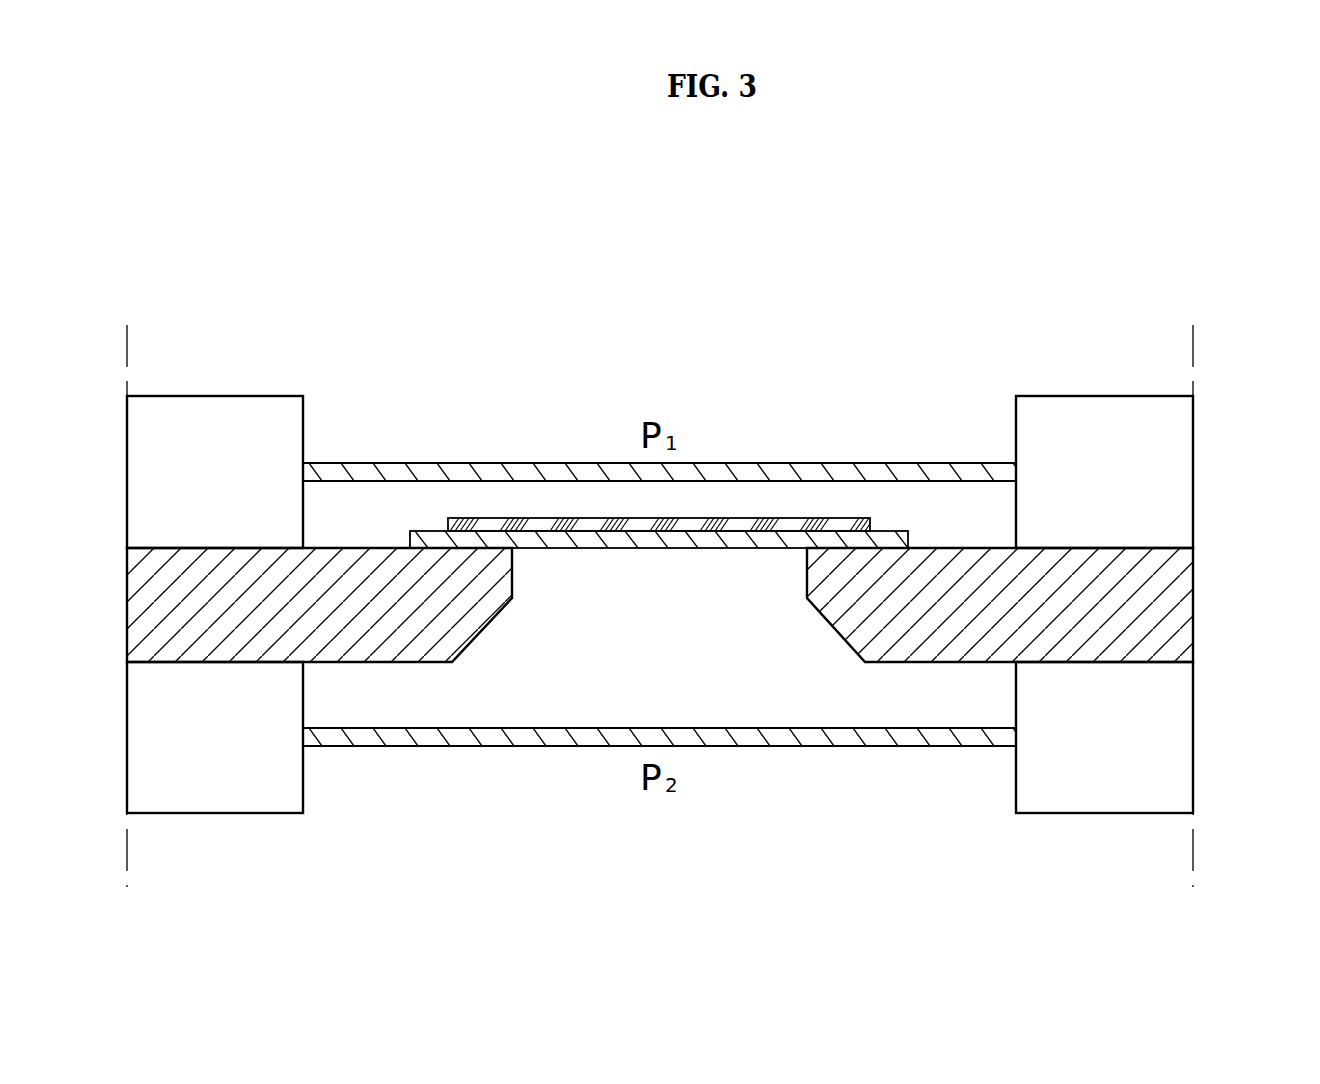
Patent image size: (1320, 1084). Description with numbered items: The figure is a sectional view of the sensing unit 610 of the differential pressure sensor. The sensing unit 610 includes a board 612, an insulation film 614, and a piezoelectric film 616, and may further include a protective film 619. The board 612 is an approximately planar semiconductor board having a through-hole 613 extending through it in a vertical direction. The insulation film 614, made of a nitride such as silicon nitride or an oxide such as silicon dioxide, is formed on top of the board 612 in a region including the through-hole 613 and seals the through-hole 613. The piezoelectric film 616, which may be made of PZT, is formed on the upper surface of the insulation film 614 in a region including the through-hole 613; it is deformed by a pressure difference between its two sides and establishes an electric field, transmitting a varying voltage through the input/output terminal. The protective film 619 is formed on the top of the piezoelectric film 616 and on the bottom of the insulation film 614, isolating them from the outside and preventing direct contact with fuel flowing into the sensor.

The sensing unit 610 is at (1178, 269).
The board 612 is at (367, 645).
The through-hole 613 is at (512, 574).
The insulation film 614 is at (889, 533).
The piezoelectric film 616 is at (763, 518).
The protective film 619 is at (424, 472).